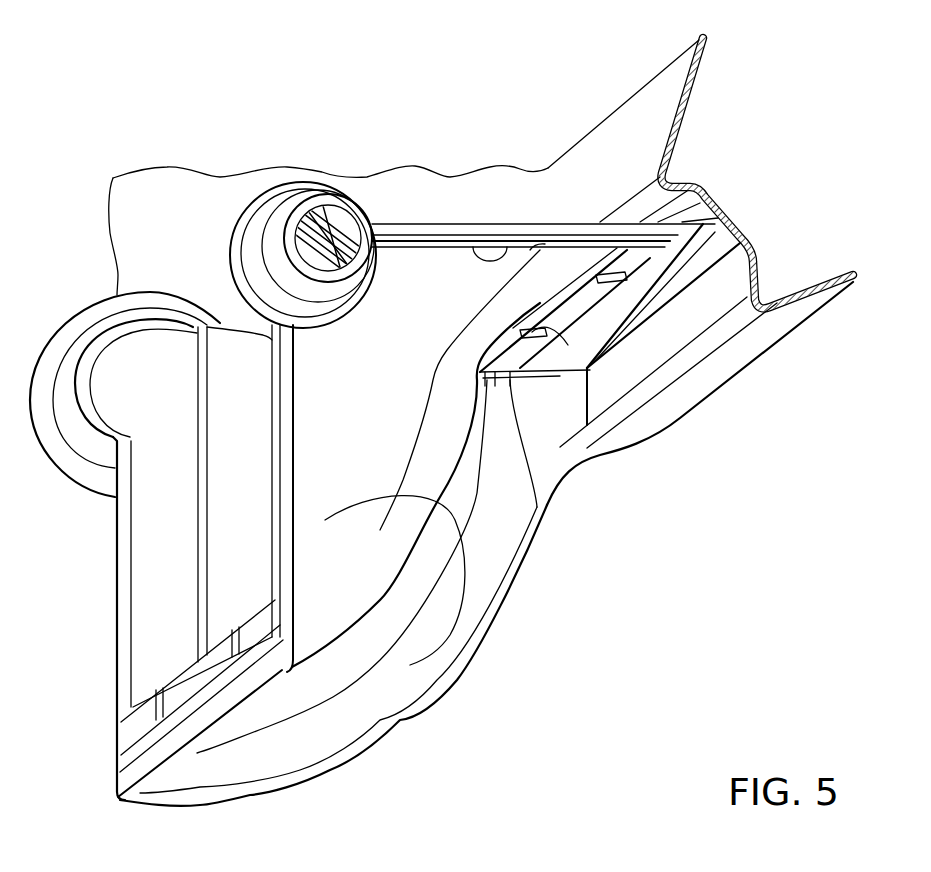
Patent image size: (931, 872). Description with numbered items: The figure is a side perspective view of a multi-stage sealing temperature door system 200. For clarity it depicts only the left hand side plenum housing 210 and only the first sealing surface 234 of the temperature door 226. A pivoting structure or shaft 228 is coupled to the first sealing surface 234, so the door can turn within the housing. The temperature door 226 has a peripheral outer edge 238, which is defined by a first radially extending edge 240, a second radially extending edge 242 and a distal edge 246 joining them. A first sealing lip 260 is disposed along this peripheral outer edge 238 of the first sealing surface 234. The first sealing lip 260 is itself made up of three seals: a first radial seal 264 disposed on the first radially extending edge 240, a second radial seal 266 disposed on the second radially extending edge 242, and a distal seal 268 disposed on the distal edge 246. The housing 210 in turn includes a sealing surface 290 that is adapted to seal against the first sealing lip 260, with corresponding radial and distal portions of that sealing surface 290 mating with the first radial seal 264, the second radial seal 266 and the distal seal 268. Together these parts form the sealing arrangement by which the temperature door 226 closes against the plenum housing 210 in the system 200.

The multi-stage sealing temperature door system 200 is at (90, 56).
The left hand side plenum housing 210 is at (423, 207).
The temperature door 226 is at (400, 720).
The pivoting structure or shaft 228 is at (337, 195).
The first sealing surface 234 is at (465, 223).
The peripheral outer edge 238 is at (622, 212).
The first radially extending edge 240 is at (500, 405).
The second radially extending edge 242 is at (500, 227).
The distal edge 246 is at (548, 345).
The first sealing lip 260 is at (708, 200).
The first radial seal 264 is at (507, 380).
The second radial seal 266 is at (538, 222).
The distal seal 268 is at (623, 293).
The sealing surface 290 is at (672, 285).